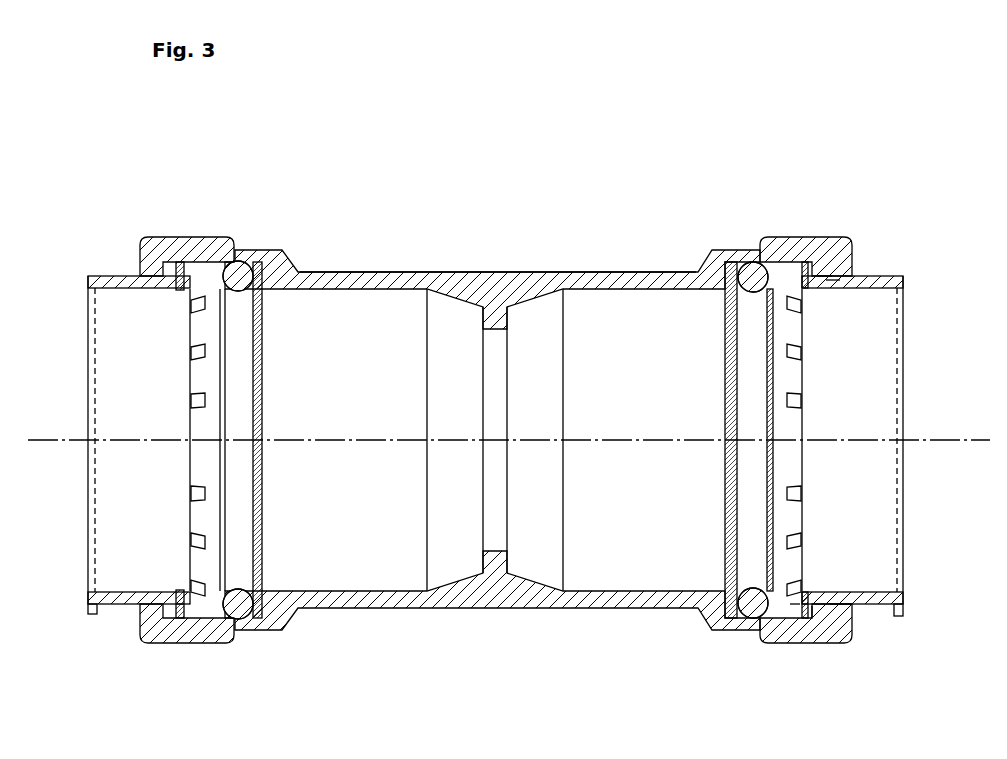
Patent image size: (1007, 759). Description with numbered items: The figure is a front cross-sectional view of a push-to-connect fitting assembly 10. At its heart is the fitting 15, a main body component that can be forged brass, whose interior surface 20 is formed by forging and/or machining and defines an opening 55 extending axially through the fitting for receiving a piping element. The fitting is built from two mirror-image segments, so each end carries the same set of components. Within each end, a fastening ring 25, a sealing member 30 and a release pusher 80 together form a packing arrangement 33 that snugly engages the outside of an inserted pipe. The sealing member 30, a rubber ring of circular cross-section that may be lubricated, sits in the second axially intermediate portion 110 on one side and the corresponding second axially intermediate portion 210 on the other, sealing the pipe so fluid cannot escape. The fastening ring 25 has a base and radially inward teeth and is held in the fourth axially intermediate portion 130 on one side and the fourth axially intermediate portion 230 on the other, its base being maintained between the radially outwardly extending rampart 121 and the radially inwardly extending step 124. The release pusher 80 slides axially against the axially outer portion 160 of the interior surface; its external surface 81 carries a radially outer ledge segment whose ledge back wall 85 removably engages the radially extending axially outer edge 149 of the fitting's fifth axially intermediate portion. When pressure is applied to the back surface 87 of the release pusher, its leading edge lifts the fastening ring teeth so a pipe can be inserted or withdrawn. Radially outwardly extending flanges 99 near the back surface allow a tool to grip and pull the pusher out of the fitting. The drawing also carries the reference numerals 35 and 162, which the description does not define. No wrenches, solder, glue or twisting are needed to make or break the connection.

The push-to-connect fitting assembly 10 is at (530, 404).
The fitting 15 is at (430, 271).
The interior surface 20 is at (492, 414).
The fastening ring 25 is at (189, 608).
The sealing member 30 is at (244, 606).
The packing arrangement 33 is at (139, 499).
The pipe wall 35 is at (118, 606).
The opening 55 is at (76, 440).
The release pusher 80 is at (874, 430).
The external surface 81 is at (862, 274).
The ledge back wall 85 is at (833, 281).
The back surface 87 is at (907, 602).
The radially outwardly extending flanges 99 is at (89, 606).
The second axially intermediate portion 110 is at (748, 299).
The radially outwardly extending rampart 121 is at (794, 615).
The radially inwardly extending step 124 is at (816, 621).
The fourth axially intermediate portion 130 is at (809, 261).
The radially extending axially outer edge 149 is at (826, 272).
The axially outer portion 160 is at (839, 613).
The nut 162 is at (814, 423).
The second axially intermediate portion 210 is at (239, 299).
The fourth axially intermediate portion 230 is at (185, 261).